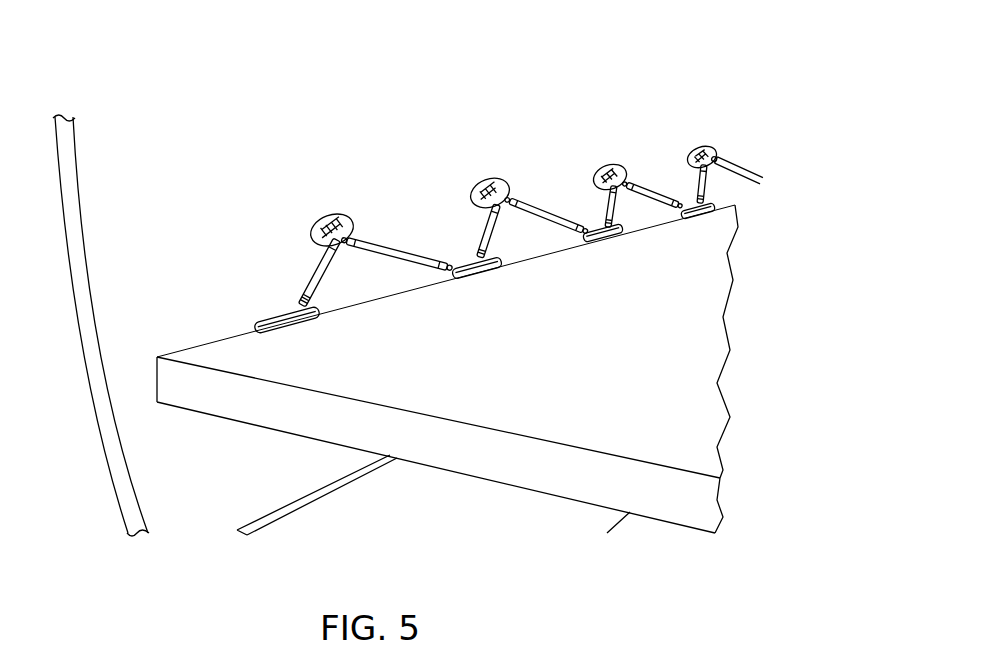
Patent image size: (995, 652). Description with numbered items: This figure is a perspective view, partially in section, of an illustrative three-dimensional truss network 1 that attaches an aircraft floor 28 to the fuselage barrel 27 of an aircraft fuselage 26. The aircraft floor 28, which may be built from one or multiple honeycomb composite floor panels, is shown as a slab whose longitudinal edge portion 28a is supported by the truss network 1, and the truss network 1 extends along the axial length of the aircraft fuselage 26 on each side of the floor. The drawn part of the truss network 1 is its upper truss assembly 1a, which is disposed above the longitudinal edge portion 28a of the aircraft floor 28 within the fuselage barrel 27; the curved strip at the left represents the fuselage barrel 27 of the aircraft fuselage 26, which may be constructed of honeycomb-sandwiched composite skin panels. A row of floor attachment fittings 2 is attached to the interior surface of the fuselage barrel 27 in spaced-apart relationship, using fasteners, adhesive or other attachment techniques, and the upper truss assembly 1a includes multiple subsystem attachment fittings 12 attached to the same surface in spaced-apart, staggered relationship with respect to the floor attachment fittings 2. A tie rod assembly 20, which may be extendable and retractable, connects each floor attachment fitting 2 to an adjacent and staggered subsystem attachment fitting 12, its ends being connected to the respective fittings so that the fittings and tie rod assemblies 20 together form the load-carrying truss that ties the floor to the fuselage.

The truss network 1 is at (345, 135).
The upper truss assembly 1a is at (713, 80).
The floor attachment fitting 2 is at (308, 322).
The subsystem attachment fitting 12 is at (358, 218).
The tie rod assembly 20 is at (328, 272).
The aircraft fuselage 26 is at (77, 172).
The fuselage barrel 27 is at (70, 227).
The aircraft floor 28 is at (532, 467).
The longitudinal edge portion 28a is at (193, 393).